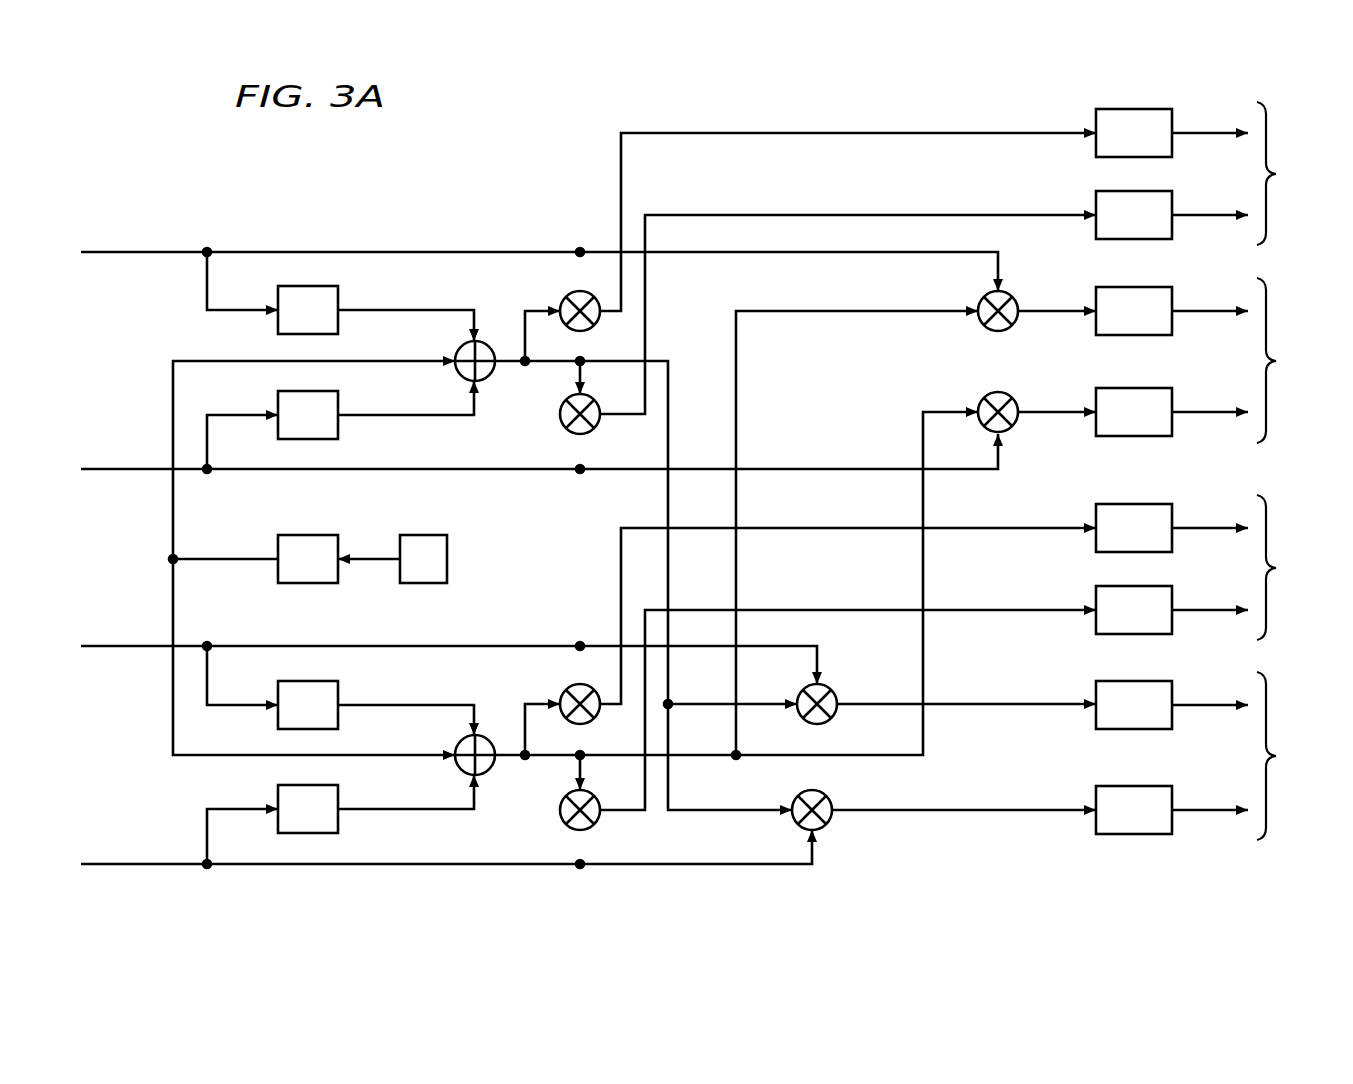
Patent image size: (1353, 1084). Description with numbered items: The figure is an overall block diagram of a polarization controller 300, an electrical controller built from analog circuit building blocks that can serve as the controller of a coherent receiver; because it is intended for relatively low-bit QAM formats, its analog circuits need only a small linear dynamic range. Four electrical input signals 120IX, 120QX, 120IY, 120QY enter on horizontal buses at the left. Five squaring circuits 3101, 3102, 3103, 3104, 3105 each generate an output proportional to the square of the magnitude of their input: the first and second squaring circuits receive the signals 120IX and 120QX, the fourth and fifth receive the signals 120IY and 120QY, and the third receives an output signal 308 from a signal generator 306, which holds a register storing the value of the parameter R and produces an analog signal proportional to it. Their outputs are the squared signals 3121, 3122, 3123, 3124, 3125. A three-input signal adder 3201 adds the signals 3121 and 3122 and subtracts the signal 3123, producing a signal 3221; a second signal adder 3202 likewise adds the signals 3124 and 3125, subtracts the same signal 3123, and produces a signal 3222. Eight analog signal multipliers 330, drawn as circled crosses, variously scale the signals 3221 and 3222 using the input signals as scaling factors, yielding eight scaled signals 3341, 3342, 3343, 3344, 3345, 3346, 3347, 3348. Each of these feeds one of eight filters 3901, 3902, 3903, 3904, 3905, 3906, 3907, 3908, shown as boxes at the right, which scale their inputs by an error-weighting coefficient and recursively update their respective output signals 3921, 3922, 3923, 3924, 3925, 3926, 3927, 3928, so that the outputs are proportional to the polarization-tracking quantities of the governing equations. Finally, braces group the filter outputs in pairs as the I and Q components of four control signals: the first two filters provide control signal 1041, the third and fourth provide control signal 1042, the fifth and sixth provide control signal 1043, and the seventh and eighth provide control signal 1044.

The controller 300 is at (322, 161).
The electrical signal 120IX is at (103, 252).
The electrical signal 120QX is at (103, 469).
The electrical signal 120IY is at (103, 646).
The electrical signal 120QY is at (103, 864).
The squaring circuit 3101 is at (277, 325).
The squaring circuit 3102 is at (277, 403).
The squaring circuit 3103 is at (300, 535).
The squaring circuit 3104 is at (277, 718).
The squaring circuit 3105 is at (277, 796).
The signal generator 306 is at (447, 559).
The output signal 308 is at (368, 564).
The output signal 3121 is at (372, 309).
The output signal 3122 is at (372, 416).
The output signal 3123 is at (173, 514).
The output signal 3124 is at (372, 704).
The output signal 3125 is at (372, 810).
The signal adder 3201 is at (458, 374).
The signal adder 3202 is at (458, 768).
The signal 3221 is at (662, 360).
The signal 3222 is at (693, 757).
The analog signal multiplier 330 is at (567, 298).
The scaled signal 3341 is at (1055, 132).
The scaled signal 3342 is at (1055, 214).
The scaled signal 3343 is at (1055, 704).
The scaled signal 3344 is at (1055, 809).
The scaled signal 3345 is at (1055, 310).
The scaled signal 3346 is at (1055, 411).
The scaled signal 3347 is at (1055, 527).
The scaled signal 3348 is at (1055, 609).
The filter 3901 is at (1158, 154).
The filter 3902 is at (1158, 236).
The filter 3903 is at (1158, 726).
The filter 3904 is at (1158, 831).
The filter 3905 is at (1158, 332).
The filter 3906 is at (1158, 433).
The filter 3907 is at (1158, 549).
The filter 3908 is at (1158, 631).
The output signal 3921 is at (1207, 132).
The output signal 3922 is at (1207, 214).
The output signal 3923 is at (1207, 704).
The output signal 3924 is at (1207, 809).
The output signal 3925 is at (1207, 310).
The output signal 3926 is at (1207, 411).
The output signal 3927 is at (1207, 527).
The output signal 3928 is at (1207, 609).
The control signal 1041 is at (1291, 173).
The control signal 1042 is at (1291, 756).
The control signal 1043 is at (1291, 360).
The control signal 1044 is at (1291, 567).